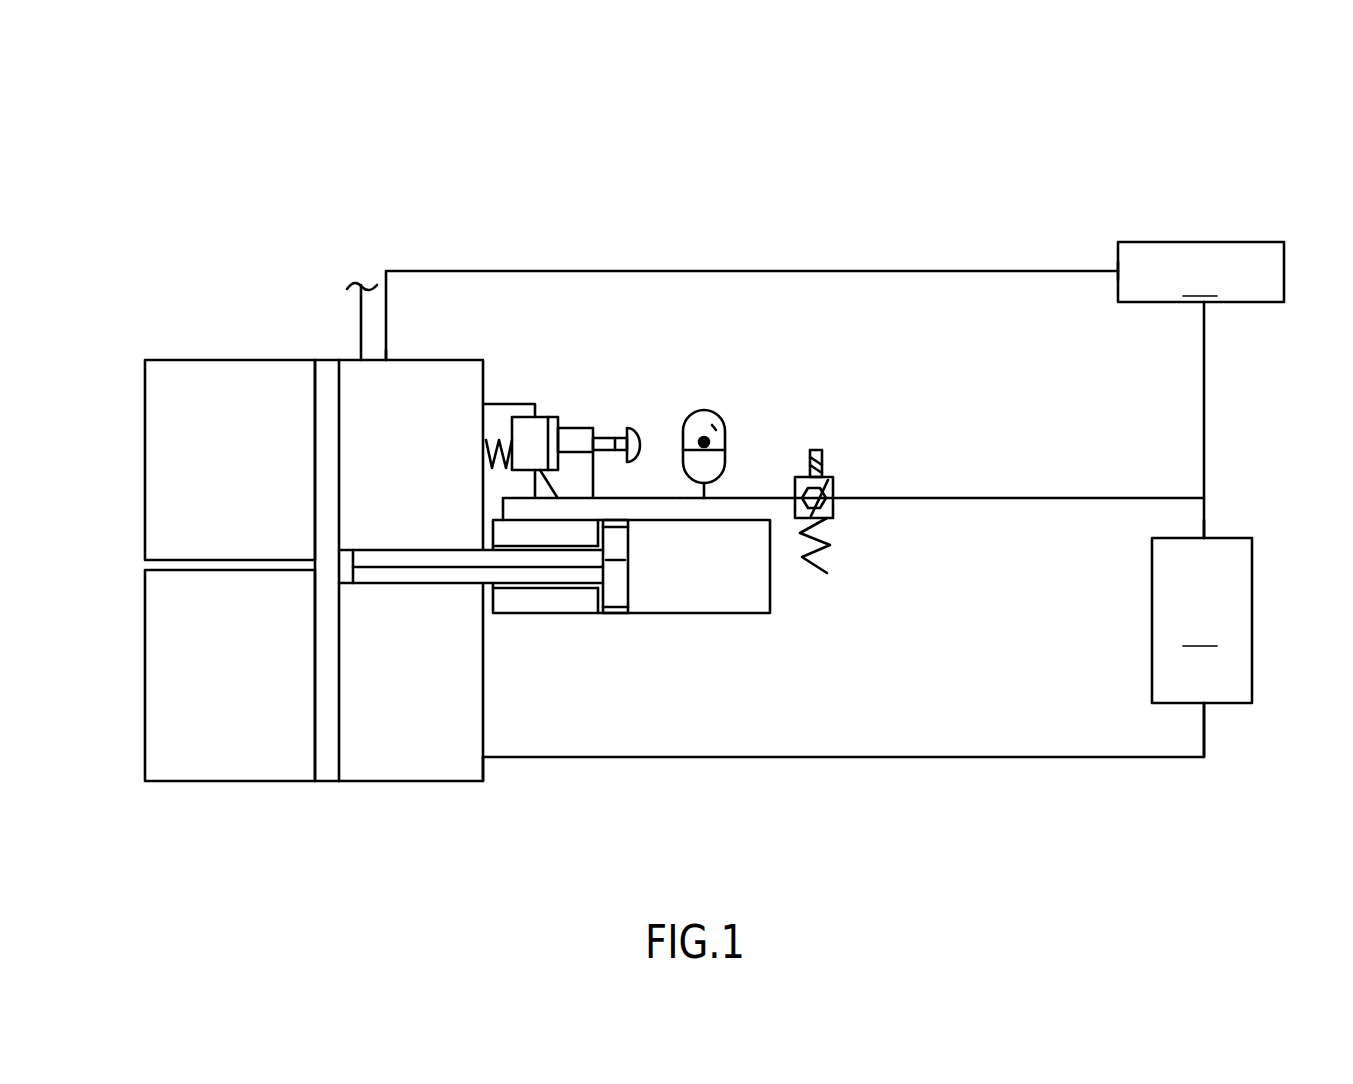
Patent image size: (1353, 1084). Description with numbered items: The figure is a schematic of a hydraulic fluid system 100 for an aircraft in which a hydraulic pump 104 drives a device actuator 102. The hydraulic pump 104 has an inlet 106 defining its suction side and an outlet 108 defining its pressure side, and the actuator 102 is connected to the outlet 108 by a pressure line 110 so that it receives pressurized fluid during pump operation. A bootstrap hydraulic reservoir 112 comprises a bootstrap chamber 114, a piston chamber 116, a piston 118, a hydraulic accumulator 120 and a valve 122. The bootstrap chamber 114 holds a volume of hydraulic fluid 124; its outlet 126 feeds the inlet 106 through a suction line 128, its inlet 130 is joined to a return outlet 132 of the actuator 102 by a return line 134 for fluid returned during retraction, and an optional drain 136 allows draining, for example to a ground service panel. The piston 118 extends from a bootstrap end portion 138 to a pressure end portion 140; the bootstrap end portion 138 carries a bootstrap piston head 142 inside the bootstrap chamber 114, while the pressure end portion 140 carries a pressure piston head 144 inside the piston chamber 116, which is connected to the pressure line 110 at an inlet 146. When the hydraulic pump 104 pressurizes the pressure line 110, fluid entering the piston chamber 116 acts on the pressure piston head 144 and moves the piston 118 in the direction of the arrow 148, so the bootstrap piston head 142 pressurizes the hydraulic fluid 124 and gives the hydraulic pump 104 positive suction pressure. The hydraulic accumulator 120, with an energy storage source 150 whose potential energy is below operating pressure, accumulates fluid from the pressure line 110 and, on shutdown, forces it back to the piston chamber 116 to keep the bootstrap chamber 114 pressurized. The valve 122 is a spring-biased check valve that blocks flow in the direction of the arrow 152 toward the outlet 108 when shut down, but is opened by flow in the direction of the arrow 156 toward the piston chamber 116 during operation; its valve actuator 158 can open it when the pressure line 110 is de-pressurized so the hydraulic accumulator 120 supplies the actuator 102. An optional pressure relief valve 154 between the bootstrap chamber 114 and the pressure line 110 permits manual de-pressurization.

The hydraulic fluid system 100 is at (1222, 108).
The actuator 102 is at (1201, 272).
The hydraulic pump 104 is at (1202, 620).
The inlet 106 is at (1203, 704).
The outlet 108 is at (1205, 537).
The pressure line 110 is at (1205, 420).
The bootstrap hydraulic reservoir 112 is at (292, 289).
The bootstrap chamber 114 is at (240, 783).
The piston chamber 116 is at (667, 616).
The piston 118 is at (518, 575).
The hydraulic accumulator 120 is at (673, 388).
The valve 122 is at (865, 429).
The hydraulic fluid 124 is at (405, 783).
The outlet 126 is at (483, 763).
The suction line 128 is at (775, 758).
The inlet 130 is at (387, 358).
The return outlet 132 is at (1117, 270).
The return line 134 is at (700, 271).
The drain 136 is at (360, 337).
The bootstrap end portion 138 is at (273, 631).
The pressure end portion 140 is at (620, 593).
The bootstrap piston head 142 is at (325, 502).
The pressure piston head 144 is at (616, 650).
The inlet 146 is at (505, 518).
The arrow 148 is at (576, 686).
The energy storage source 150 is at (712, 425).
The arrow 152 is at (952, 419).
The pressure relief valve 154 is at (554, 379).
The arrow 156 is at (967, 577).
The actuator 158 is at (816, 448).